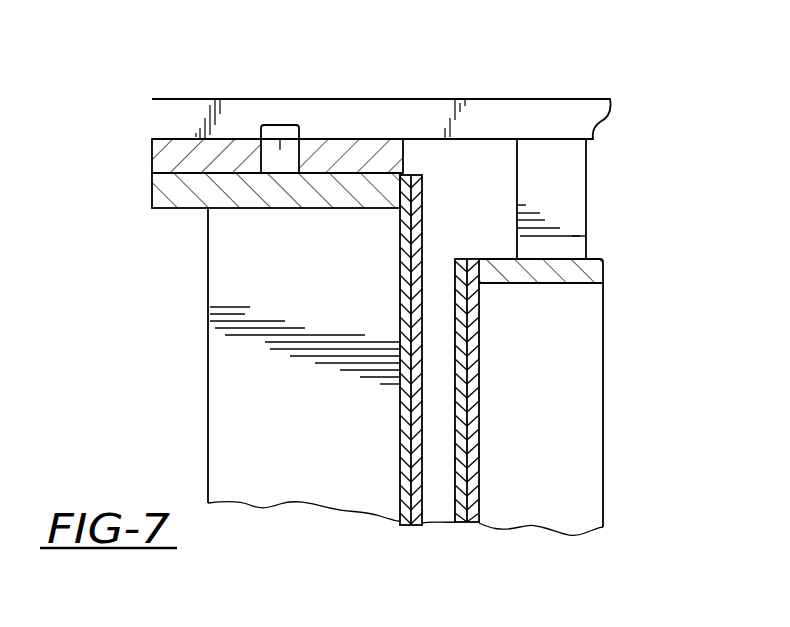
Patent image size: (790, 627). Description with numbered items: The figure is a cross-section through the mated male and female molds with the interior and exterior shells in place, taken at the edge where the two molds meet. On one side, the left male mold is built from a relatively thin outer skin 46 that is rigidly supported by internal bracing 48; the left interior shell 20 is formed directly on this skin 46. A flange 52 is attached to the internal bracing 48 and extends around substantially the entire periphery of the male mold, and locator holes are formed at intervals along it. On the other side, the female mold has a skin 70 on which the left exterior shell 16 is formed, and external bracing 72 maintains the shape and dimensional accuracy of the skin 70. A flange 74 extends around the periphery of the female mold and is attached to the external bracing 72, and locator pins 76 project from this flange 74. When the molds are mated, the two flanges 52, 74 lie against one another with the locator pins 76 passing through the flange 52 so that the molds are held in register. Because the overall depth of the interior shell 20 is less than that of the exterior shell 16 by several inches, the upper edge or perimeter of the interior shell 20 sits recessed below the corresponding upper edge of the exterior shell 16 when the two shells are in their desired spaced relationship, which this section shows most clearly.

The left exterior shell 16 is at (410, 526).
The left interior shell 20 is at (462, 523).
The outer skin 46 is at (470, 523).
The internal bracing 48 is at (582, 417).
The flange 52 is at (160, 158).
The skin 70 is at (400, 525).
The external bracing 72 is at (225, 392).
The flange 74 is at (160, 190).
The locator pins 76 is at (290, 135).